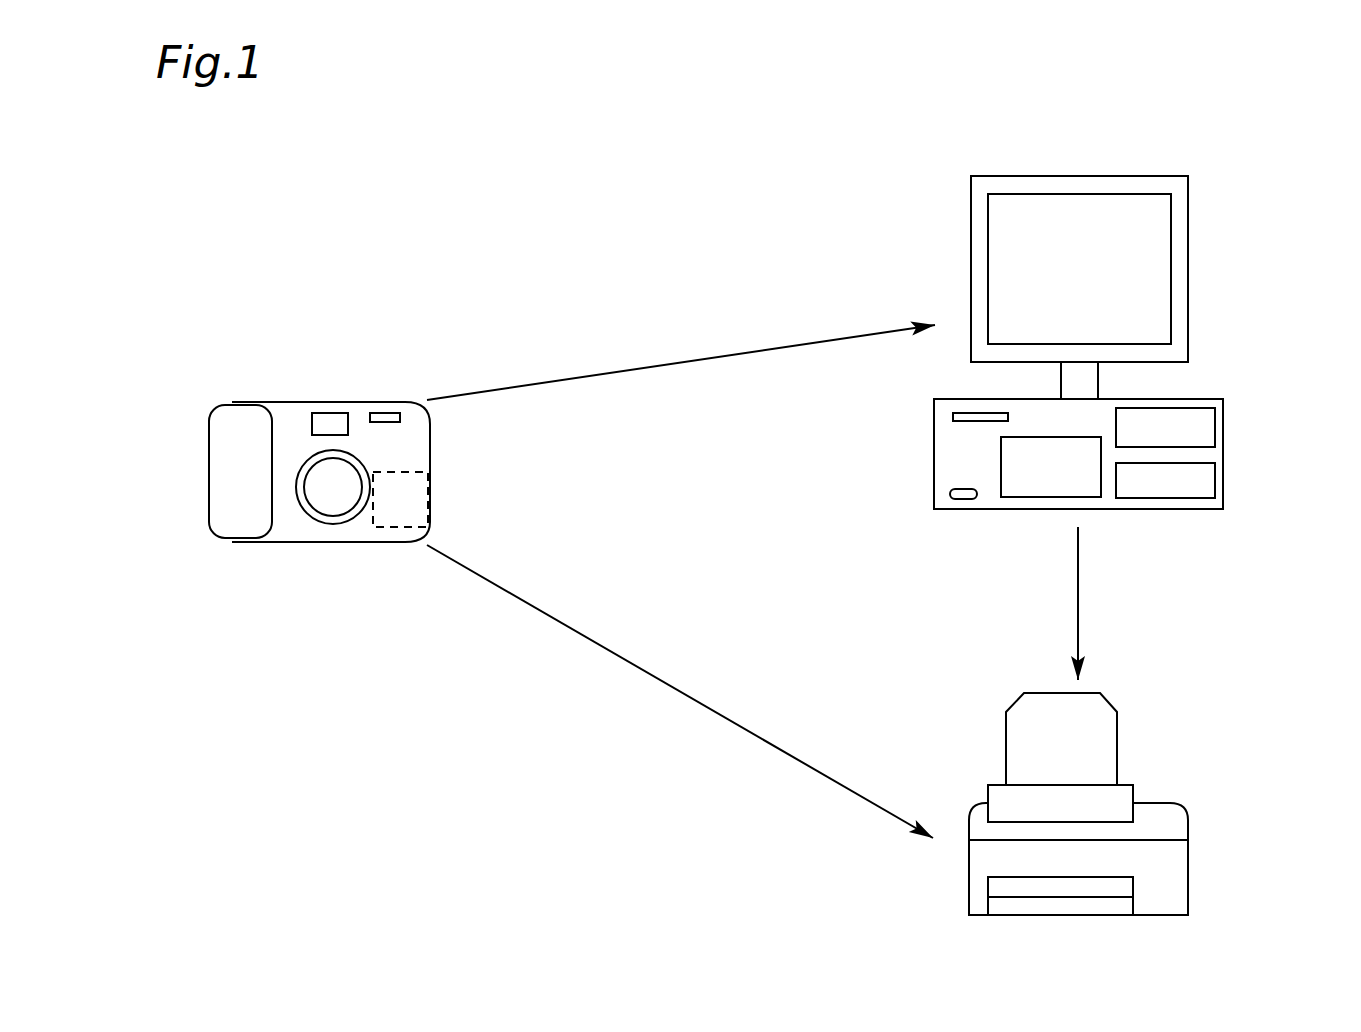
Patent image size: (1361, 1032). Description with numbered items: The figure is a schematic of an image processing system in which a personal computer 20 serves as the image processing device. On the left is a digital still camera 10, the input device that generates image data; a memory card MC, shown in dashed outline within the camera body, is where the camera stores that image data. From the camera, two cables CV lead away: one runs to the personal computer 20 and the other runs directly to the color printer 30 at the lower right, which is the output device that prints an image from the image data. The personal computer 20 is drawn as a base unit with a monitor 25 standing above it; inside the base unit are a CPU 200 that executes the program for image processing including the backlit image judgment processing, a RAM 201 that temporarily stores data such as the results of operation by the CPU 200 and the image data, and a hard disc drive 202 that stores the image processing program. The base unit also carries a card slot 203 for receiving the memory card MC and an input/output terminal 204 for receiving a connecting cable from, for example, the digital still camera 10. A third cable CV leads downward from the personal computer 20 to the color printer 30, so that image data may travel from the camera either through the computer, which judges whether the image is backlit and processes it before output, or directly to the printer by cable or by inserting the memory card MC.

The digital still camera 10 is at (298, 400).
The memory card MC is at (410, 498).
The cable CV is at (693, 343).
The personal computer 20 is at (1091, 378).
The monitor / display 25 is at (1190, 275).
The CPU 200 is at (1208, 461).
The RAM 201 is at (1210, 407).
The hard disc drive (HDD) 202 is at (1013, 498).
The card slot 203 is at (965, 410).
The input/output terminal 204 is at (958, 490).
The color printer 30 is at (1153, 802).